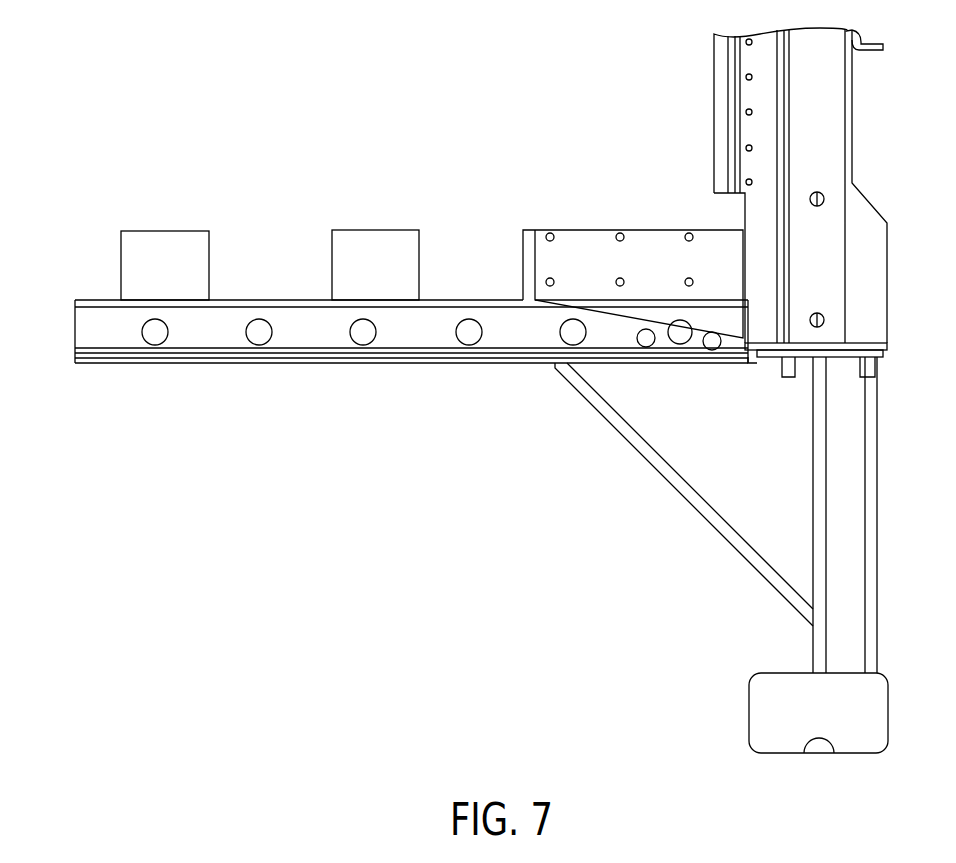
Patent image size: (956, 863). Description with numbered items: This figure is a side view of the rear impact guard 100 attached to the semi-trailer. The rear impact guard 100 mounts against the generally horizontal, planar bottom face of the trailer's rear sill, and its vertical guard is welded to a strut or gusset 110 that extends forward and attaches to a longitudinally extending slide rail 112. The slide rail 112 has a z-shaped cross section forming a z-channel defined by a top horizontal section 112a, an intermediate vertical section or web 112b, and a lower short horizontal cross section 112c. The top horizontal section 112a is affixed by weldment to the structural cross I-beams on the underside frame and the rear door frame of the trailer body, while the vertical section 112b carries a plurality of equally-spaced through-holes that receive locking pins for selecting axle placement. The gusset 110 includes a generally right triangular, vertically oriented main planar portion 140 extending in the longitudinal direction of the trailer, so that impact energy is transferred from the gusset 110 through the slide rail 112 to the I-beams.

The rear impact guard 100 is at (488, 435).
The gusset 110 is at (721, 390).
The slide rail 112 is at (388, 337).
The top horizontal section 112a is at (296, 312).
The intermediate vertical section 112b is at (220, 345).
The lower short horizontal cross section 112c is at (323, 363).
The main planar portion 140 is at (762, 530).